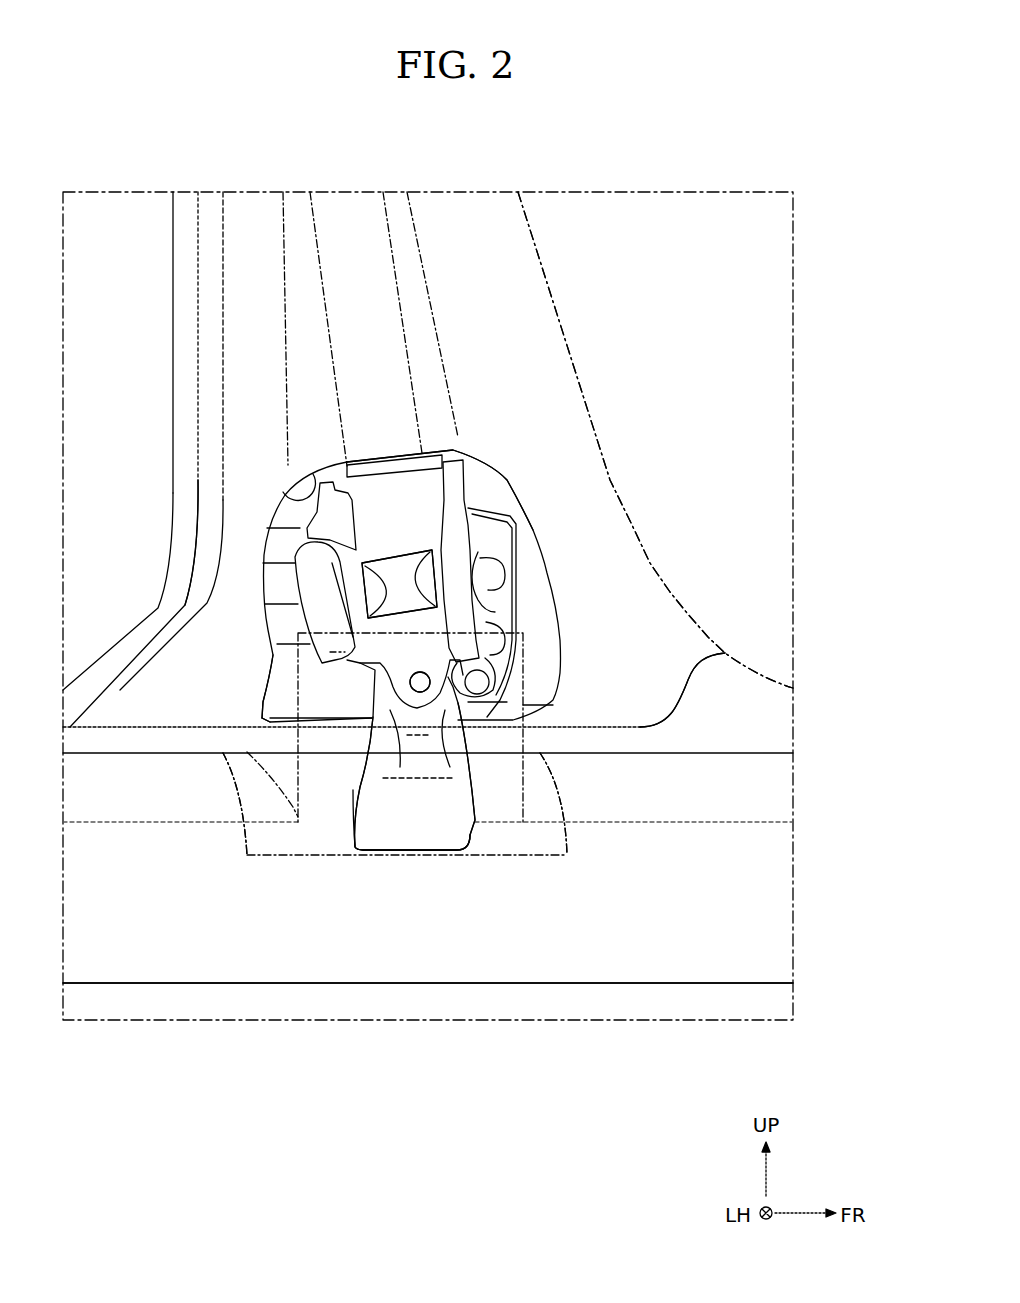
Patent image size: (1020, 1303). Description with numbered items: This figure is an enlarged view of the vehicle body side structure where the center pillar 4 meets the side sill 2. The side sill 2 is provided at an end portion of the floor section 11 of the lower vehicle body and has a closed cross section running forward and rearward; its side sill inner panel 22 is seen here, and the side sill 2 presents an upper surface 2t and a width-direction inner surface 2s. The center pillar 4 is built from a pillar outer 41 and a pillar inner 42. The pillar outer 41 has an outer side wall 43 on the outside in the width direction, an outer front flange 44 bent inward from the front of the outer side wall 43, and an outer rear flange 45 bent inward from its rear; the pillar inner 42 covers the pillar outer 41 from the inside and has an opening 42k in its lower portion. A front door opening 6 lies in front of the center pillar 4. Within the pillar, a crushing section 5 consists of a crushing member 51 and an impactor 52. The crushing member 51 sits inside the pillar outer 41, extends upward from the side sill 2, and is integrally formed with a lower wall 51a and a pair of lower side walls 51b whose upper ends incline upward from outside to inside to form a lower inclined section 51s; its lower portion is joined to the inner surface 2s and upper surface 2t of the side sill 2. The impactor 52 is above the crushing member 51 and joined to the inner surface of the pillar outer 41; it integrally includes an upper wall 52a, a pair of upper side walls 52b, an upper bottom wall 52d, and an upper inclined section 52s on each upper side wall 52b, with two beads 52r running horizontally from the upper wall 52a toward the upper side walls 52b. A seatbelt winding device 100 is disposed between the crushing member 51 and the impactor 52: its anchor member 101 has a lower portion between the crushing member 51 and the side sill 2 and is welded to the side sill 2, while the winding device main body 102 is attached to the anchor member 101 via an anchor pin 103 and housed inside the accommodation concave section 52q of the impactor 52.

The side sill 2 is at (617, 957).
The side sill inner panel 22 is at (693, 958).
The upper surface of the side sill 2t is at (750, 753).
The inner surface of the side sill 2s is at (743, 860).
The floor section 11 is at (753, 982).
The center pillar 4 is at (545, 255).
The outer front flange 44 is at (560, 327).
The pillar inner 42 is at (245, 267).
The outer rear flange 45 is at (185, 336).
The pillar outer 41 is at (273, 517).
The outer side wall 43 is at (142, 506).
The opening 42k is at (283, 492).
The seatbelt winding device 100 is at (430, 456).
The anchor member 101 is at (410, 833).
The winding device main body 102 is at (380, 583).
The anchor pin 103 is at (420, 692).
The crushing section 5 is at (522, 562).
The impactor 52 is at (530, 590).
The upper wall 52a is at (270, 593).
The upper side walls 52b is at (545, 515).
The accommodation concave section 52q is at (280, 580).
The beads 52r is at (485, 673).
The upper inclined section 52s is at (470, 718).
The upper bottom wall 52d is at (317, 710).
The crushing member 51 is at (497, 747).
The lower wall 51a is at (328, 773).
The lower side walls 51b is at (255, 750).
The lower inclined section 51s is at (276, 700).
The front door opening 6 is at (767, 677).